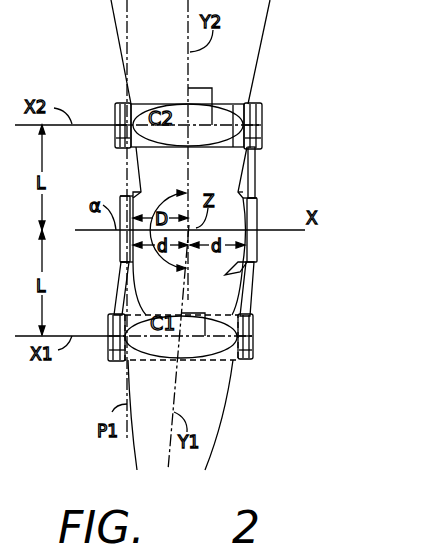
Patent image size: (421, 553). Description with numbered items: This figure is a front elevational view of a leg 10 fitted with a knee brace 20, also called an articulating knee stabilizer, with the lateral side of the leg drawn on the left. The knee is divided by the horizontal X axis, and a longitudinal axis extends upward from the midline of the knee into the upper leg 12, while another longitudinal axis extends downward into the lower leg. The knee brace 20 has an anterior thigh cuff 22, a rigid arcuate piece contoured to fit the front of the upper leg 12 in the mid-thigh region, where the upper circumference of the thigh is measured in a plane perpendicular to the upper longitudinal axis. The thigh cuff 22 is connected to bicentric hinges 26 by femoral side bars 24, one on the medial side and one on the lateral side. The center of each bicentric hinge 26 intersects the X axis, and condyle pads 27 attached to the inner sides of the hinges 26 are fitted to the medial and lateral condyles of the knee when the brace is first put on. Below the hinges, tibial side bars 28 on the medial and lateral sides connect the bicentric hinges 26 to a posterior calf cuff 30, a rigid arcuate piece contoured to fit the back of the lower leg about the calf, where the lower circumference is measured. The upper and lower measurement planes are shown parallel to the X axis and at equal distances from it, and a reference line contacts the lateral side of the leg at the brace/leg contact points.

The leg 10 is at (258, 62).
The upper leg 12 is at (112, 23).
The knee brace 20 is at (114, 118).
The anterior thigh cuff 22 is at (149, 104).
The femoral side bars 24 is at (256, 152).
The bicentric hinges 26 is at (257, 223).
The condyle pads 27 is at (123, 272).
The tibial side bars 28 is at (253, 288).
The posterior calf cuff 30 is at (224, 363).